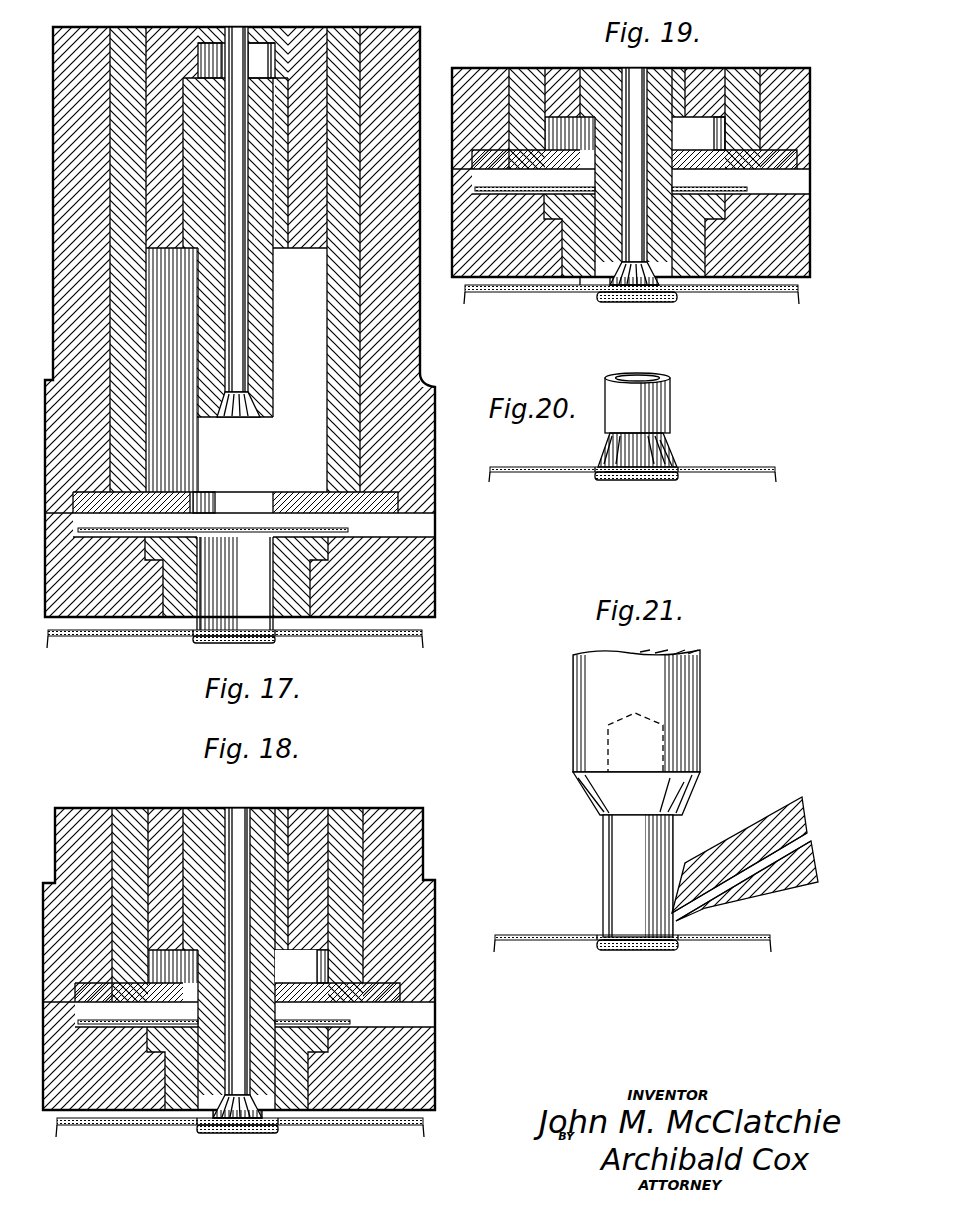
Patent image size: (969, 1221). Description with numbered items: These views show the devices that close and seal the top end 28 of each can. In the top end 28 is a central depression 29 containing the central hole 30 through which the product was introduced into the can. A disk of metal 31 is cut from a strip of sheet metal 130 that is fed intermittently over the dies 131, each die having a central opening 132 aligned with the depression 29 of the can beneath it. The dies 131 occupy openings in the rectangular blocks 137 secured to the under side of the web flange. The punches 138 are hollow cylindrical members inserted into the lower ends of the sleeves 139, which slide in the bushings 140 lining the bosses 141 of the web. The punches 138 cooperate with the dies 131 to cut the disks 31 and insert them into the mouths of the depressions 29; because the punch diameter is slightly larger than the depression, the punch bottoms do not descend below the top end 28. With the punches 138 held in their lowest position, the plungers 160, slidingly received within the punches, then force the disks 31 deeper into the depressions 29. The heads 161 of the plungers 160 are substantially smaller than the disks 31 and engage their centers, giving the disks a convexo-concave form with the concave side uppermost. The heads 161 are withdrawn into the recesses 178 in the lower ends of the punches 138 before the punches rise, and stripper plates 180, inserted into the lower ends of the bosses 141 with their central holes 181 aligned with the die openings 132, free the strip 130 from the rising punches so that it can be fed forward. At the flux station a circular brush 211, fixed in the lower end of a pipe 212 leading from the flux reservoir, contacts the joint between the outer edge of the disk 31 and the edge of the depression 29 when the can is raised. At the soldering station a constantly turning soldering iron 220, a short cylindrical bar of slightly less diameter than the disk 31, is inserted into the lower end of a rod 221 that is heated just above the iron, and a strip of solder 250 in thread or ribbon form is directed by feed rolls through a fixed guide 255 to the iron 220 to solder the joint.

In FIG. 17, the top end of can 28 is at (383, 636).
In FIG. 18, the top end of can 28 is at (367, 1126).
In FIG. 19, the top end of can 28 is at (768, 293).
In FIG. 20, the top end of can 28 is at (735, 473).
In FIG. 21, the top end of can 28 is at (550, 942).
In FIG. 17, the central depression 29 is at (195, 640).
In FIG. 18, the central depression 29 is at (197, 1128).
In FIG. 20, the central depression 29 is at (595, 476).
In FIG. 21, the central depression 29 is at (597, 946).
In FIG. 17, the central hole or aperture 30 is at (243, 645).
In FIG. 18, the central hole or aperture 30 is at (247, 1133).
In FIG. 19, the central hole or aperture 30 is at (647, 303).
In FIG. 20, the central hole or aperture 30 is at (627, 481).
In FIG. 21, the central hole or aperture 30 is at (647, 951).
In FIG. 18, the disk of metal 31 is at (237, 1124).
In FIG. 19, the disk of metal 31 is at (677, 295).
In FIG. 20, the disk of metal 31 is at (643, 481).
In FIG. 21, the disk of metal 31 is at (633, 950).
In FIG. 17, the strip of sheet metal 130 is at (348, 530).
In FIG. 18, the strip of sheet metal 130 is at (343, 1024).
In FIG. 19, the strip of sheet metal 130 is at (753, 189).
In FIG. 17, the die 131 is at (285, 543).
In FIG. 18, the die 131 is at (293, 1097).
In FIG. 19, the die 131 is at (634, 235).
In FIG. 17, the central opening of die 132 is at (232, 548).
In FIG. 18, the central opening of die 132 is at (200, 1083).
In FIG. 17, the rectangular block 137 is at (407, 560).
In FIG. 18, the rectangular block 137 is at (239, 1056).
In FIG. 19, the rectangular block 137 is at (528, 263).
In FIG. 17, the punch 138 is at (268, 345).
In FIG. 18, the punch 138 is at (275, 825).
In FIG. 19, the punch 138 is at (602, 77).
In FIG. 17, the sleeve 139 is at (313, 246).
In FIG. 18, the sleeve 139 is at (310, 827).
In FIG. 19, the sleeve 139 is at (635, 92).
In FIG. 17, the bushing 140 is at (347, 363).
In FIG. 18, the bushing 140 is at (350, 825).
In FIG. 19, the bushing 140 is at (634, 118).
In FIG. 17, the boss of web 141 is at (412, 322).
In FIG. 18, the boss of web 141 is at (407, 832).
In FIG. 19, the boss of web 141 is at (487, 78).
In FIG. 17, the plunger 160 is at (237, 380).
In FIG. 18, the plunger 160 is at (237, 813).
In FIG. 19, the plunger 160 is at (634, 165).
In FIG. 17, the head of plunger 161 is at (237, 406).
In FIG. 18, the head of plunger 161 is at (217, 1107).
In FIG. 19, the head of plunger 161 is at (627, 302).
In FIG. 19, the recess in punch 178 is at (600, 277).
In FIG. 17, the stripper plate 180 is at (317, 487).
In FIG. 18, the stripper plate 180 is at (387, 993).
In FIG. 19, the stripper plate 180 is at (707, 158).
In FIG. 17, the central hole of stripper plate 181 is at (223, 492).
In FIG. 18, the central hole of stripper plate 181 is at (280, 982).
In FIG. 19, the central hole of stripper plate 181 is at (635, 133).
In FIG. 20, the brush 211 is at (667, 450).
In FIG. 20, the pipe 212 is at (663, 398).
In FIG. 21, the soldering iron 220 is at (623, 878).
In FIG. 21, the rod 221 is at (636, 732).
In FIG. 21, the strip of solder 250 is at (764, 857).
In FIG. 21, the fixed guide 255 is at (783, 895).